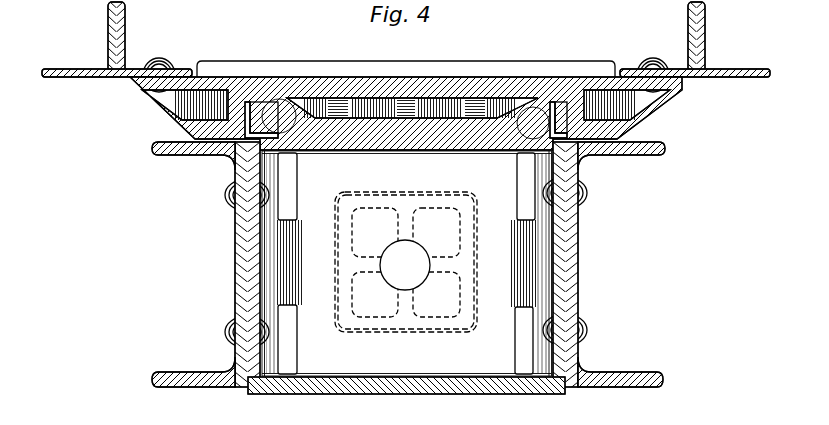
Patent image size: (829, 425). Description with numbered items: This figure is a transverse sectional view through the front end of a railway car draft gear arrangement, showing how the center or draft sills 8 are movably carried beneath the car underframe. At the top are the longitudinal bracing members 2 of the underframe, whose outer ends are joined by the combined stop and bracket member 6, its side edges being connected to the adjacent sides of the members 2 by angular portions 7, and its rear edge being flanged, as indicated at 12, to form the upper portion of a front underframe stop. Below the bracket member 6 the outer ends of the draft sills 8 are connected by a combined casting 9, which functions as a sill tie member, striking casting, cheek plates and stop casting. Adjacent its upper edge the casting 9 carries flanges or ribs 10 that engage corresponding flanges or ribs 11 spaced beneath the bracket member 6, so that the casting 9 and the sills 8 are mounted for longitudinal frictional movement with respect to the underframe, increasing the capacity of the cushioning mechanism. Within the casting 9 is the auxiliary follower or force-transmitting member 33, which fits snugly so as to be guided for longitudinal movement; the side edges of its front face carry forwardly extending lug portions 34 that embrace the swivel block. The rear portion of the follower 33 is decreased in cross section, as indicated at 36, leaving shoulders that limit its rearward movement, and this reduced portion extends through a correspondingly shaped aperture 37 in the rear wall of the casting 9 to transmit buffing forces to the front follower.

The longitudinal bracing members 2 is at (108, 50).
The combined stop and bracket member 6 is at (410, 88).
The angular portions 7 is at (123, 50).
The center or draft sills 8 is at (590, 158).
The combined casting 9 is at (445, 151).
The flanges or ribs 10 is at (259, 108).
The flanges or ribs 11 is at (297, 112).
The flange 12 is at (338, 62).
The auxiliary follower or force-transmitting member 33 is at (406, 249).
The lug portions 34 is at (293, 193).
The decreased cross section portion 36 is at (435, 327).
The aperture 37 is at (381, 334).